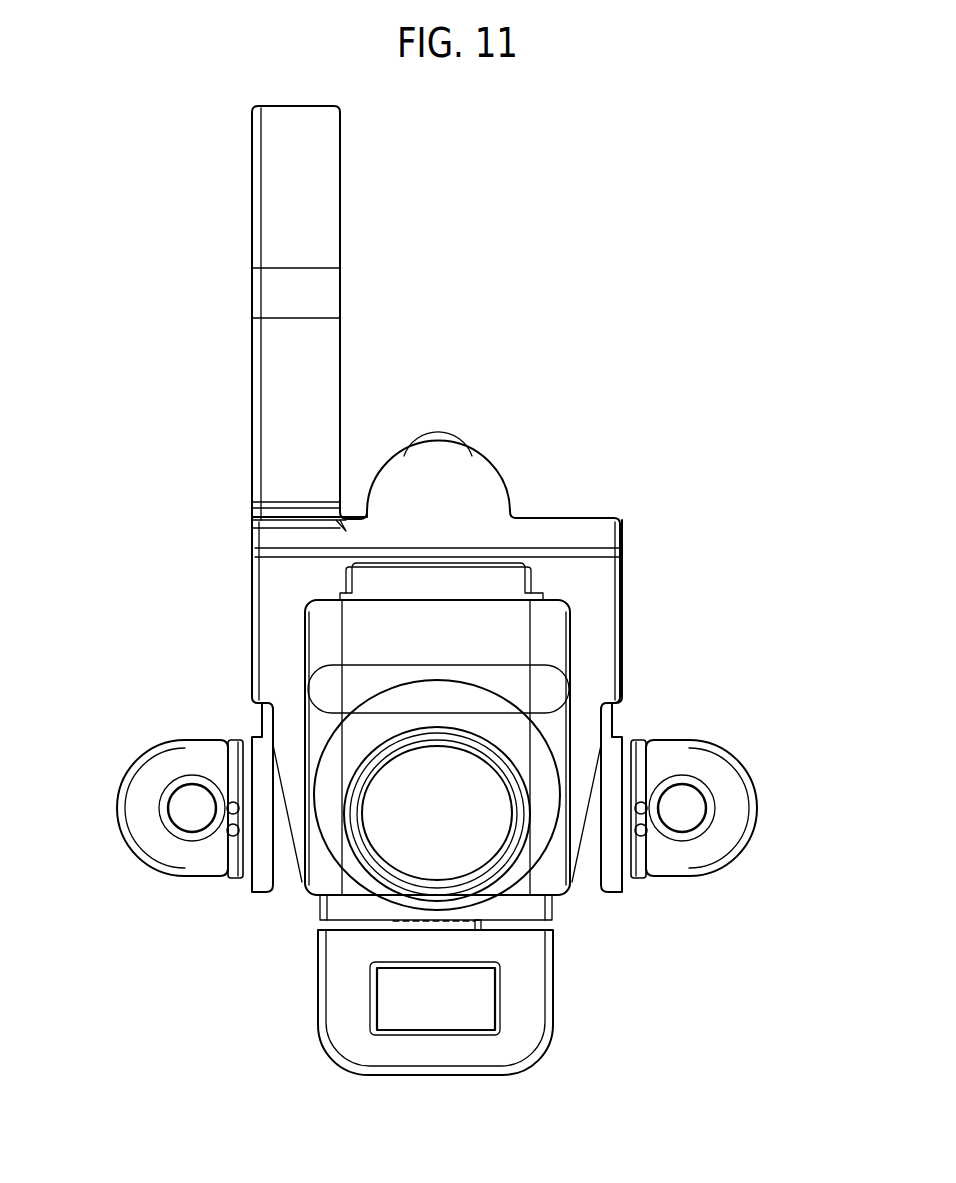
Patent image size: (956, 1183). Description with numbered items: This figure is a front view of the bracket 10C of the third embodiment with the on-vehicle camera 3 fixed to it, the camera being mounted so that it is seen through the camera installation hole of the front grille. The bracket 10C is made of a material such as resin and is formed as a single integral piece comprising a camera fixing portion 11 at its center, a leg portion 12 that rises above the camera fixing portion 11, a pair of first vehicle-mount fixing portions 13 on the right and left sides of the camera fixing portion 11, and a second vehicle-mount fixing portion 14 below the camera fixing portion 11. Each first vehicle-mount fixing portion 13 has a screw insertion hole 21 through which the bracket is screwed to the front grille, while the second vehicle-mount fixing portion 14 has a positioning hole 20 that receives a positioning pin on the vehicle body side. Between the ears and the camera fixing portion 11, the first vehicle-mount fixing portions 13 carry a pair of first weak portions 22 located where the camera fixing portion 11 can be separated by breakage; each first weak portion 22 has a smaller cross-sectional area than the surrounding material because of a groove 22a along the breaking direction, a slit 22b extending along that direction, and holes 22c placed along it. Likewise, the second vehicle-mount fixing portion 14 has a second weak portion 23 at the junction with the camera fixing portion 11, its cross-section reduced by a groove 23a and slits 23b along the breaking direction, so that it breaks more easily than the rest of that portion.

The bracket 10C is at (201, 571).
The camera fixing portion 11 is at (601, 592).
The leg portion 12 is at (322, 166).
The on-vehicle camera 3 is at (482, 720).
The first vehicle-mount fixing portions 13 is at (150, 773).
The screw insertion hole 21 is at (183, 800).
The first weak portions 22 is at (437, 856).
The groove 22a is at (217, 780).
The slit 22b is at (235, 836).
The holes 22c is at (233, 814).
The second vehicle-mount fixing portion 14 is at (468, 1058).
The positioning hole 20 is at (410, 1015).
The second weak portion 23 is at (547, 1004).
The groove 23a is at (406, 931).
The slits 23b is at (395, 918).